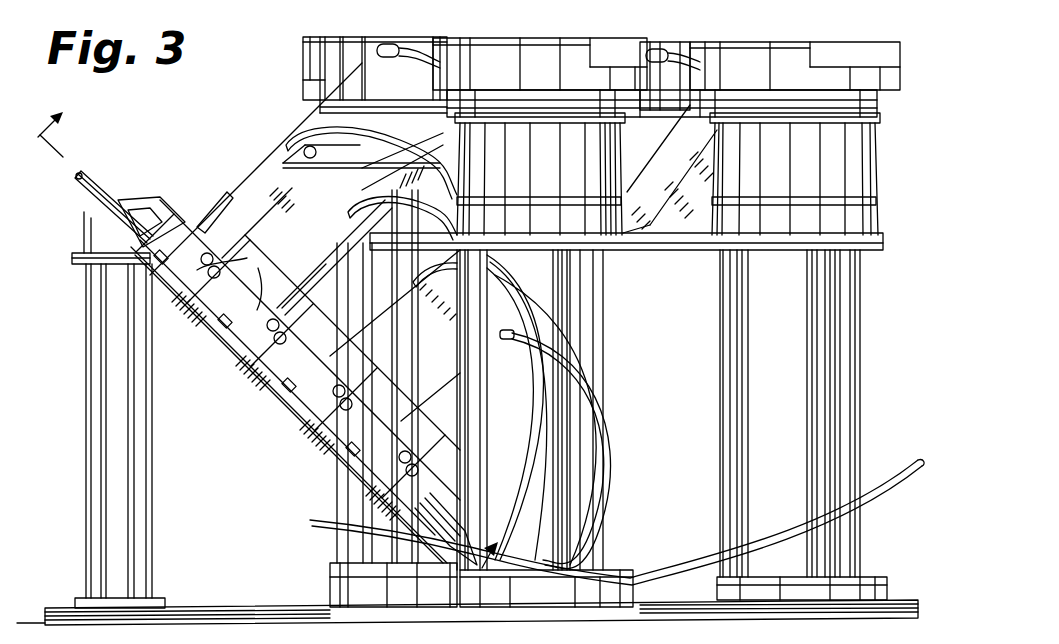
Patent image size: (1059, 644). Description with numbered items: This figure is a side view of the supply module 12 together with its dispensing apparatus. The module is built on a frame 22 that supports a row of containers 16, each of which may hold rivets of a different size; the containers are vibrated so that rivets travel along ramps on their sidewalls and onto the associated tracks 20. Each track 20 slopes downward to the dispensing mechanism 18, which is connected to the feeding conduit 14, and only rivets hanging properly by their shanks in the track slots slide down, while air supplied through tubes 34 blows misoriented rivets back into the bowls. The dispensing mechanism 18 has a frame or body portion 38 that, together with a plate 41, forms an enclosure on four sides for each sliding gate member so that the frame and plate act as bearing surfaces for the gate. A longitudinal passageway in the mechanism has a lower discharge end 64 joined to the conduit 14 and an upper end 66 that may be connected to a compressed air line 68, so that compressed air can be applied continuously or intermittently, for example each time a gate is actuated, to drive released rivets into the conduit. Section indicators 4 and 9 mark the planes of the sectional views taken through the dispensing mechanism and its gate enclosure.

The section line 4- 4 is at (229, 278).
The section line 9- 9 is at (259, 355).
The supply module 12 is at (872, 290).
The conduit 14 is at (400, 553).
The container 16 is at (546, 162).
The dispensing mechanism 18 is at (228, 396).
The track 20 is at (322, 257).
The frame 22 is at (232, 617).
The tube 34 is at (412, 48).
The frame or body portion 38 is at (262, 388).
The plate 41 is at (206, 312).
The lower discharge end 64 is at (430, 542).
The upper end 66 is at (152, 206).
The compressed air line 68 is at (93, 172).